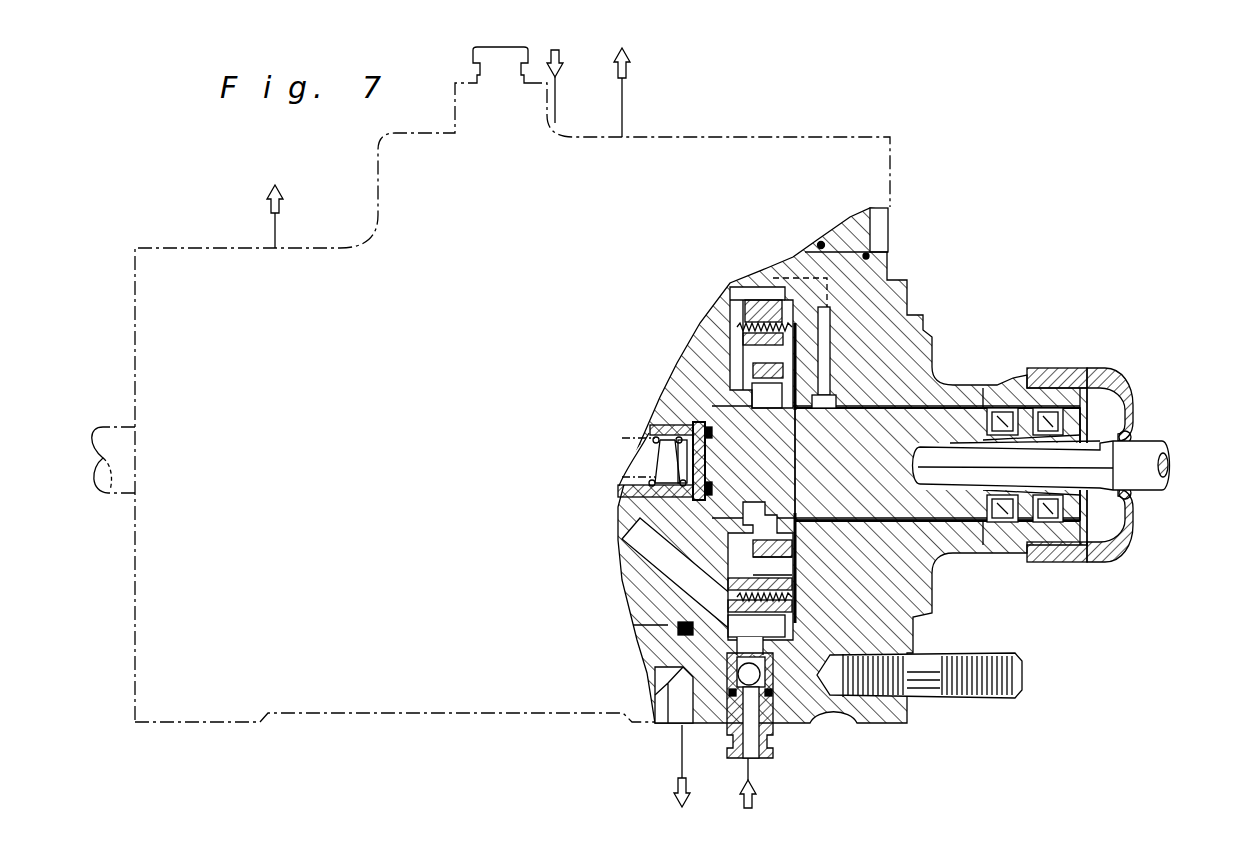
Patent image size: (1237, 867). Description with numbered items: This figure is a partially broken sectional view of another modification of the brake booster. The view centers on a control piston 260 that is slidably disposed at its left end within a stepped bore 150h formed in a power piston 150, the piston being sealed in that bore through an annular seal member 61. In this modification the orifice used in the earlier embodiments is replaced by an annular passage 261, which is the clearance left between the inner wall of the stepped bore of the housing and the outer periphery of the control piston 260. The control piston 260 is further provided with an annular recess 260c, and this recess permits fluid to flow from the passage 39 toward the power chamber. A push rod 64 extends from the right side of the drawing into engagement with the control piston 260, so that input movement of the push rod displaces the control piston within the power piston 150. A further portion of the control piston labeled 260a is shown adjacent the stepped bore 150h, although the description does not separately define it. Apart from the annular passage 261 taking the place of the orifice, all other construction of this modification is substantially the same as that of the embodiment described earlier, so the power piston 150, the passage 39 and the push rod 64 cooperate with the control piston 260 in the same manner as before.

The power piston 150 is at (628, 568).
The stepped bore 150h is at (697, 422).
The annular seal member 61 is at (718, 424).
The shaft flange plate 260a is at (778, 487).
The annular recess 260c is at (817, 412).
The passage 39 is at (827, 320).
The push rod 64 is at (1148, 450).
The control piston 260 is at (958, 510).
The annular passage 261 is at (933, 585).